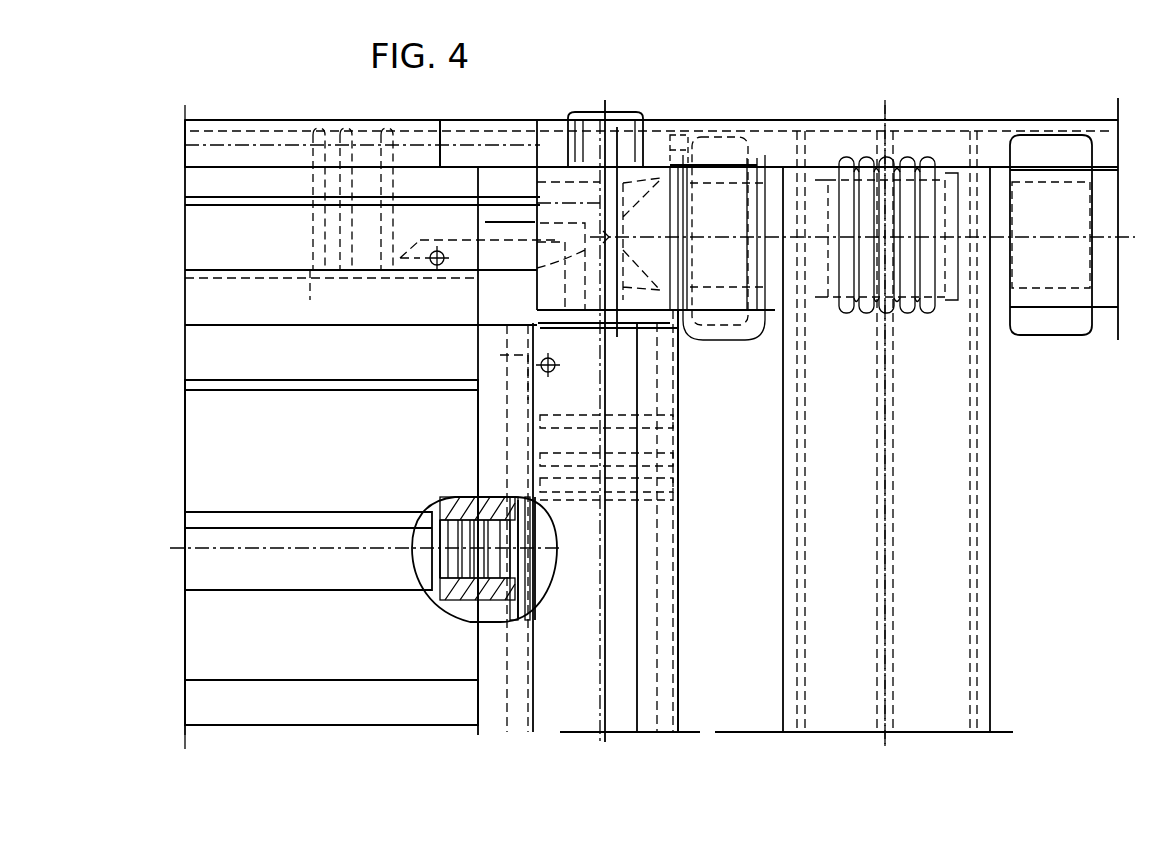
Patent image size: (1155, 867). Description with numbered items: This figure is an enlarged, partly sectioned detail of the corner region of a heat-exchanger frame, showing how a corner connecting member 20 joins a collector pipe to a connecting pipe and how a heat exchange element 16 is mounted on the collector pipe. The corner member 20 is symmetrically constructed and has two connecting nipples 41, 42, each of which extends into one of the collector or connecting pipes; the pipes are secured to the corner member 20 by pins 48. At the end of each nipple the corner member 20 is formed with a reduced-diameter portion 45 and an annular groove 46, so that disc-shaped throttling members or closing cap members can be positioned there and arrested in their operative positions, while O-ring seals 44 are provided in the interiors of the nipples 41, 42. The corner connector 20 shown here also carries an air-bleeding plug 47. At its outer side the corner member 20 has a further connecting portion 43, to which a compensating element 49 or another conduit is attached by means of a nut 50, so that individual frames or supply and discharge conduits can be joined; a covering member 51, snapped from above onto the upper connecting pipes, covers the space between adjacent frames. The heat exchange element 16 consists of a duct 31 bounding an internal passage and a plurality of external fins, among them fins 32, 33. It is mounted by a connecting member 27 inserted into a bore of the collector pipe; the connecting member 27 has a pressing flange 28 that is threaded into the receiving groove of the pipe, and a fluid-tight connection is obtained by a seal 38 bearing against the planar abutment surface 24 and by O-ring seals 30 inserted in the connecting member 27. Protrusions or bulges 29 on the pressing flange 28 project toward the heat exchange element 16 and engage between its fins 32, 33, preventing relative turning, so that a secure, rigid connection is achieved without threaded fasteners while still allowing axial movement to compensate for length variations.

The reduced-diameter portion 45 is at (312, 133).
The O-ring seal 44 is at (345, 133).
The connecting nipple 41 is at (410, 125).
The air-bleeding plug 47 is at (622, 118).
The corner connecting member 20 is at (677, 143).
The further connecting portion 43 is at (718, 157).
The nut 50 is at (747, 145).
The compensating element 49 is at (845, 157).
The covering member 51 is at (910, 118).
The annular groove 46 is at (312, 268).
The pin 48 is at (438, 265).
The fin 32 is at (205, 425).
The fin 33 is at (205, 570).
The protrusion or bulge 29 is at (440, 530).
The seal 38 is at (510, 505).
The connecting nipple 42 is at (680, 440).
The heat exchange element 16 is at (250, 727).
The duct 31 is at (425, 570).
The O-ring seal 30 is at (460, 585).
The connecting member 27 is at (490, 600).
The pressing flange 28 is at (512, 595).
The planar abutment surface 24 is at (535, 598).